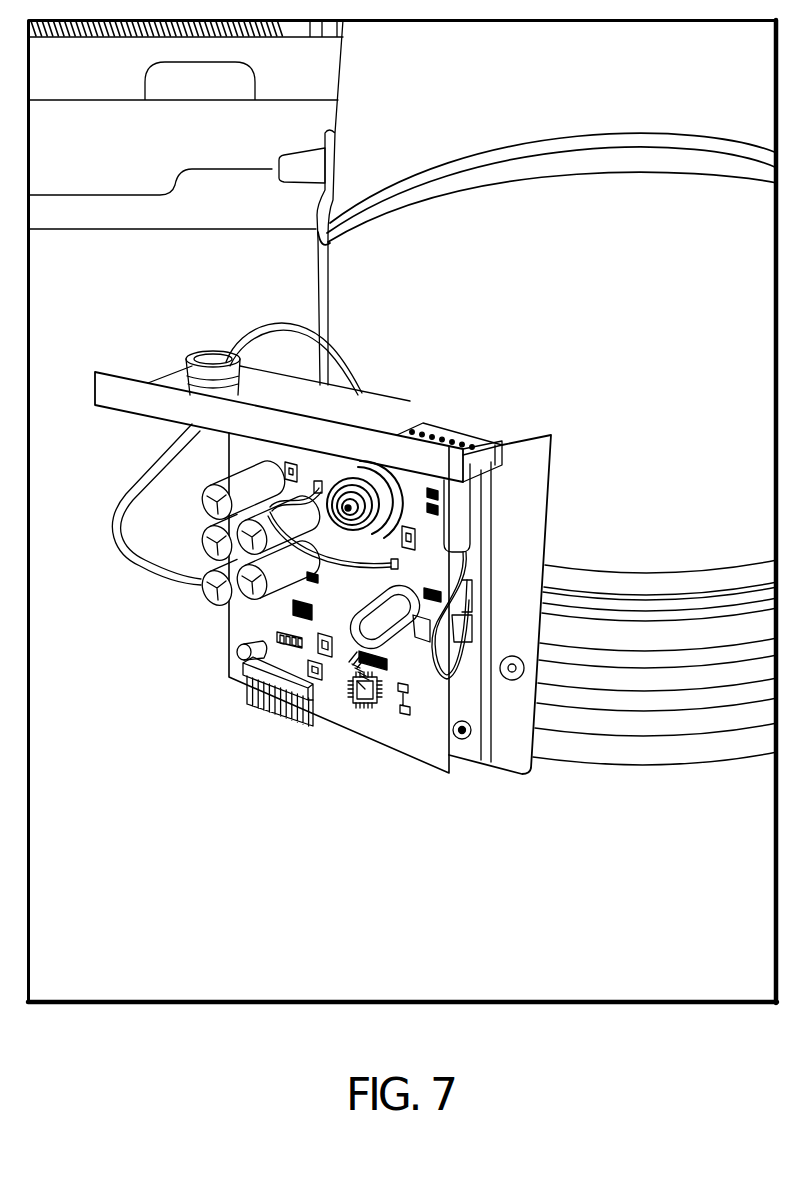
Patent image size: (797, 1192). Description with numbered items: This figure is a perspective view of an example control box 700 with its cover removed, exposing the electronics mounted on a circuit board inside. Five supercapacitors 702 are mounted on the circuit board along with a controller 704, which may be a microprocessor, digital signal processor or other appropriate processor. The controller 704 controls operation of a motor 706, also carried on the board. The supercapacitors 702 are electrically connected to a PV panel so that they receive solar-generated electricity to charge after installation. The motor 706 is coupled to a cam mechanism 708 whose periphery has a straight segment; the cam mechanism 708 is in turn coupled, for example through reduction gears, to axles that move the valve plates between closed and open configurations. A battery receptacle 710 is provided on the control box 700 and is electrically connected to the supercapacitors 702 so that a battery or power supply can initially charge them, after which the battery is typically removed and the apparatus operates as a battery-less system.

The control box 700 is at (298, 574).
The supercapacitors 702 is at (201, 506).
The controller 704 is at (353, 700).
The motor 706 is at (372, 465).
The cam mechanism 708 is at (410, 625).
The battery receptacle 710 is at (458, 438).